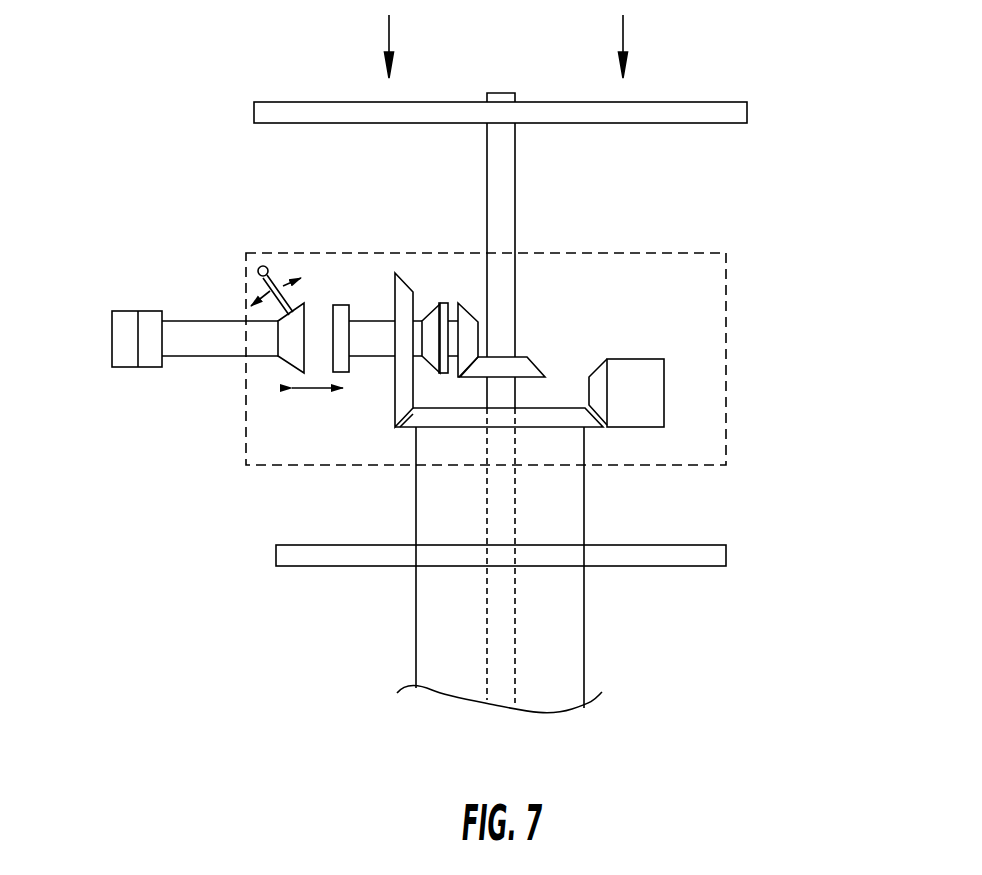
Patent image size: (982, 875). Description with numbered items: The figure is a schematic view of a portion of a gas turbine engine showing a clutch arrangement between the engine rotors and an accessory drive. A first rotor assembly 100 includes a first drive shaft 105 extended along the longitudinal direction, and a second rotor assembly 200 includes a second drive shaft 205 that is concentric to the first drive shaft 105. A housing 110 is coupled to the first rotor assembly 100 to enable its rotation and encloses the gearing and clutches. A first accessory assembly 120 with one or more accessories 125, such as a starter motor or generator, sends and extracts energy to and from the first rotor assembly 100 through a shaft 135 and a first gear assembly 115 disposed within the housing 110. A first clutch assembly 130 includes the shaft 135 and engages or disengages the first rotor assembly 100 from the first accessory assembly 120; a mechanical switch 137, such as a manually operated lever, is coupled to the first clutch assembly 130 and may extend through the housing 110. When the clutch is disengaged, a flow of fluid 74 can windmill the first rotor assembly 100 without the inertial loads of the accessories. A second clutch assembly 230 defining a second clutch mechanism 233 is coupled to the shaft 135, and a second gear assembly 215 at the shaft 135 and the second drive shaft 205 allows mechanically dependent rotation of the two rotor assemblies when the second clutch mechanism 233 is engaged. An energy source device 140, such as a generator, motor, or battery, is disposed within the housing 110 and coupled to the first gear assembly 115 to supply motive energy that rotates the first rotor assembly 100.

The flow of fluid 74 is at (388, 38).
The first rotor assembly 100 is at (266, 553).
The first drive shaft 105 is at (583, 638).
The housing 110 is at (727, 300).
The first gear assembly 115 is at (408, 434).
The first accessory assembly 120 is at (125, 360).
The accessories 125 is at (153, 318).
The first clutch assembly 130 is at (289, 405).
The shaft 135 is at (204, 330).
The mechanical switch 137 is at (262, 266).
The energy source device 140 is at (627, 370).
The second rotor assembly 200 is at (704, 74).
The second drive shaft 205 is at (503, 93).
The second gear assembly 215 is at (469, 308).
The second clutch assembly 230 is at (283, 363).
The second clutch mechanism 233 is at (443, 301).